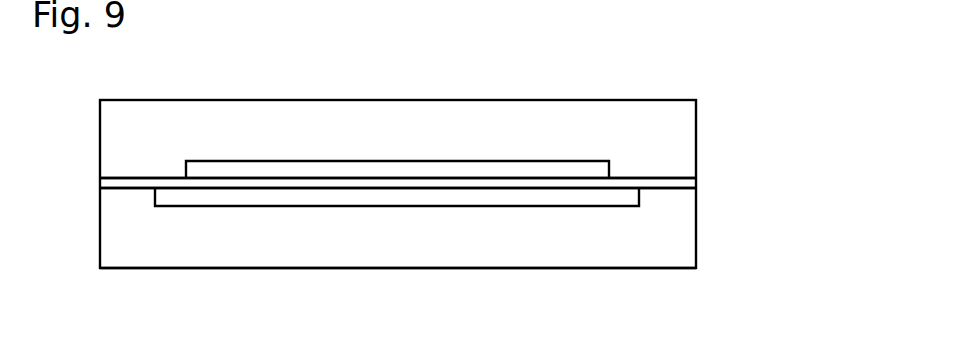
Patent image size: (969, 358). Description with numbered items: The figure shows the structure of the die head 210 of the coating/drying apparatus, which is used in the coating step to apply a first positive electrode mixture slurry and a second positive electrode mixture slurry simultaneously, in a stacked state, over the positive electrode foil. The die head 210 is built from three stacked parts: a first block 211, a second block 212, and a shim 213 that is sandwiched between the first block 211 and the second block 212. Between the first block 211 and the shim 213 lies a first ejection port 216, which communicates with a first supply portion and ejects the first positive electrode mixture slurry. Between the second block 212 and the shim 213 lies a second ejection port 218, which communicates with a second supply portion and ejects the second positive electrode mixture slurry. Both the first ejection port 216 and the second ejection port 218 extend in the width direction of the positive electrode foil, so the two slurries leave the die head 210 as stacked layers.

The die head 210 is at (680, 80).
The first block 211 is at (675, 236).
The second block 212 is at (675, 132).
The shim 213 is at (675, 186).
The first ejection port 216 is at (371, 206).
The second ejection port 218 is at (418, 166).